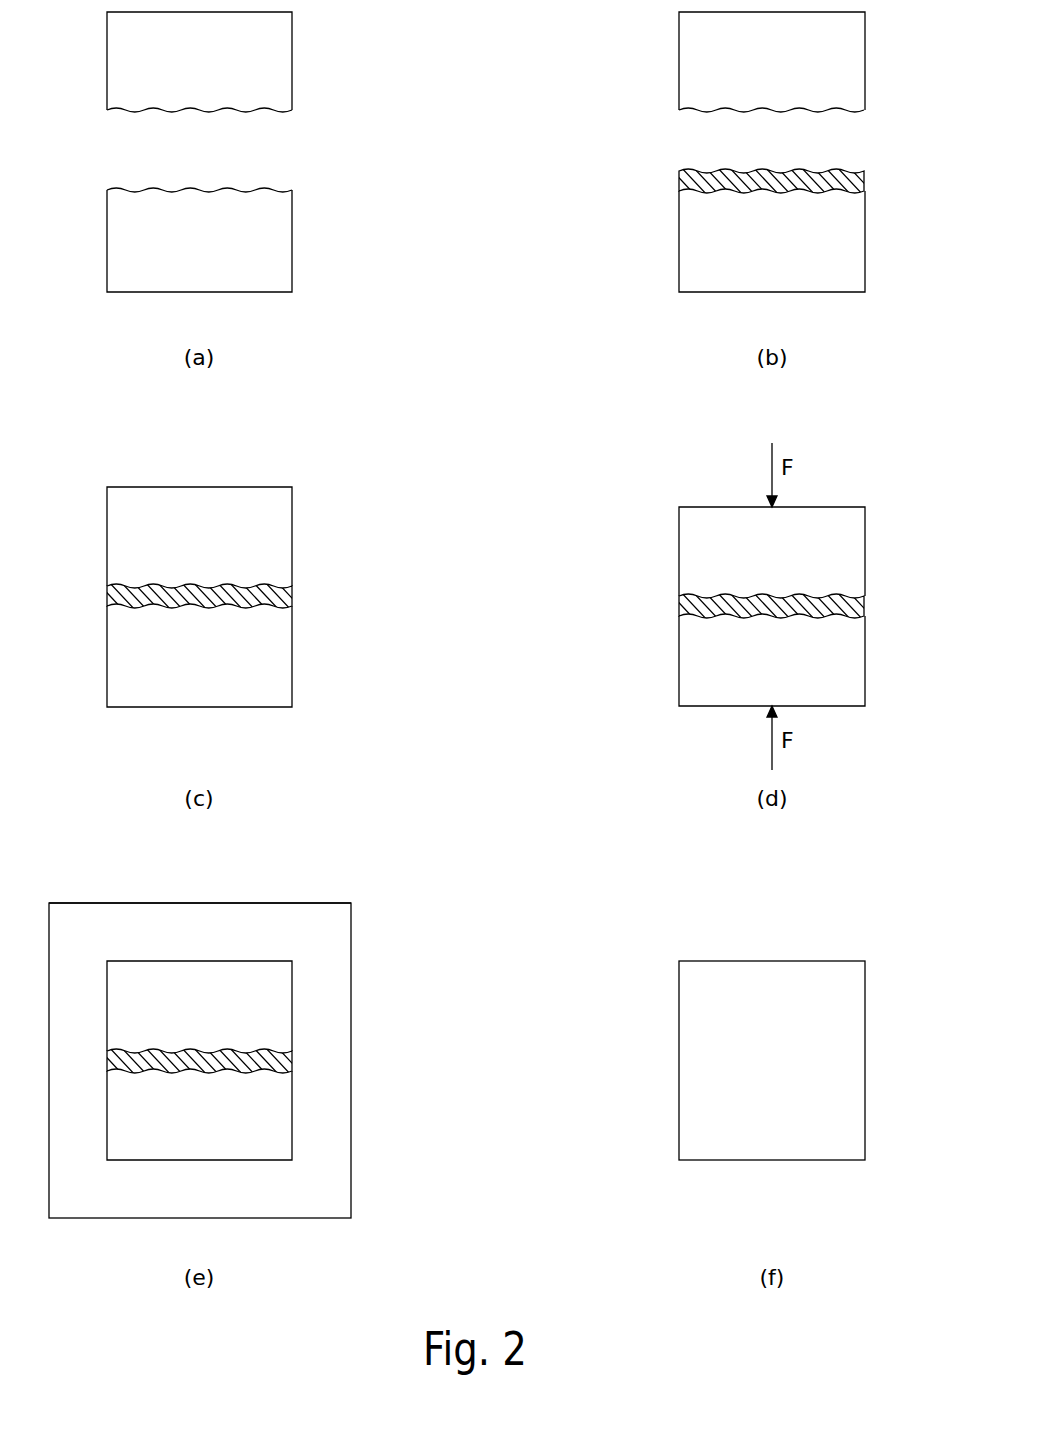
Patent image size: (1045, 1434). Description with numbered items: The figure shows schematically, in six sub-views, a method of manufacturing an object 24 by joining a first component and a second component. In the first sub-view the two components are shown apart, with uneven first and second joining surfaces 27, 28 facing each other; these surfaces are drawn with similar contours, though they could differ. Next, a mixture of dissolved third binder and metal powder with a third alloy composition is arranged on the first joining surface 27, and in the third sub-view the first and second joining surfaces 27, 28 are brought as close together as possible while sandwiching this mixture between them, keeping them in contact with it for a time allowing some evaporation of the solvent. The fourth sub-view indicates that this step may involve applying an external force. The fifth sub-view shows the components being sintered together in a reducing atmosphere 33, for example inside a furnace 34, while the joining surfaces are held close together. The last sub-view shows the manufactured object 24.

The object 24 is at (855, 1059).
The first joining surface 27 is at (270, 191).
The second joining surface 28 is at (140, 113).
The reducing atmosphere 33 is at (328, 941).
The furnace 34 is at (200, 903).